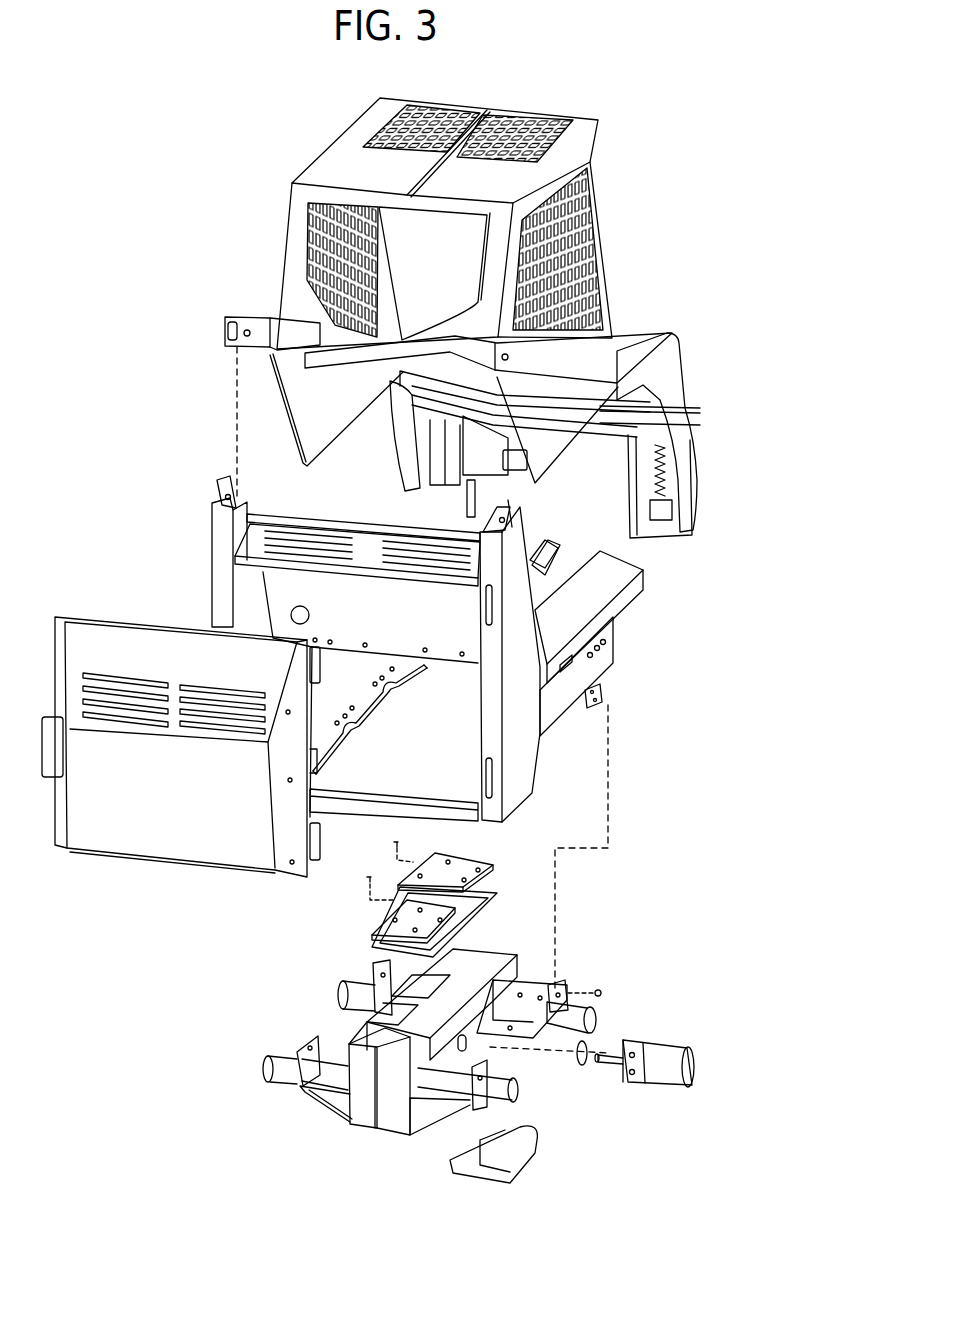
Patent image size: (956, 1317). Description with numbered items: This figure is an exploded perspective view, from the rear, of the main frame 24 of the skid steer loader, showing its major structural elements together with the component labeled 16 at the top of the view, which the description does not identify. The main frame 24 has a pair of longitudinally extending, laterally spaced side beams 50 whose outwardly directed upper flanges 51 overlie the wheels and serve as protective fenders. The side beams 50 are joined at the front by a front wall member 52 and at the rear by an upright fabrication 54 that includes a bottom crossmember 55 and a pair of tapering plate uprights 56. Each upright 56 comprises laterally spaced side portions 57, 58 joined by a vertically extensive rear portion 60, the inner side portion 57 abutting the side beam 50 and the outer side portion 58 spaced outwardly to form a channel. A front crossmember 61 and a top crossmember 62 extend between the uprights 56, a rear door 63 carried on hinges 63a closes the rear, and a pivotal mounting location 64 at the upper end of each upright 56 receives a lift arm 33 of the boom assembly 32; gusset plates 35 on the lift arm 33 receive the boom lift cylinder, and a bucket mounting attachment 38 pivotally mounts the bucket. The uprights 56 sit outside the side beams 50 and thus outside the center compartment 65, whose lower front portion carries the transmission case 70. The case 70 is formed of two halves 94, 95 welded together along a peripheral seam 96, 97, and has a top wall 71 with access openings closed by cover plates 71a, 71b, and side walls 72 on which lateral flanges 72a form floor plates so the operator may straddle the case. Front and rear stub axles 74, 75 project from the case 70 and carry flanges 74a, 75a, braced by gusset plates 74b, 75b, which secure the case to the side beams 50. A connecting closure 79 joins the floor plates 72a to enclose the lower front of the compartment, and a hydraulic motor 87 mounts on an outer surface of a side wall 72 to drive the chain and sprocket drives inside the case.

The cab 16 is at (582, 150).
The main frame 24 is at (626, 665).
The boom assembly 32 is at (496, 408).
The lift arms 33 is at (600, 355).
The gusset plates 35 is at (667, 368).
The bucket mounting attachment 38 is at (711, 416).
The side beams 50 is at (603, 635).
The upper flanges 51 is at (630, 570).
The front wall member 52 is at (565, 575).
The upright fabrication 54 is at (425, 722).
The bottom crossmember 55 is at (366, 790).
The uprights 56 is at (213, 538).
The inner side portion 57 is at (493, 520).
The outer side portion 58 is at (522, 555).
The rear portion 60 is at (482, 712).
The front crossmember 61 is at (372, 608).
The top crossmember 62 is at (372, 540).
The rear door 63 is at (211, 747).
The hinges 63a is at (308, 670).
The pivotal mounting location 64 is at (228, 490).
The center compartment 65 is at (455, 700).
The transmission case 70 is at (451, 1018).
The top wall 71 is at (490, 962).
The cover plate 71a is at (378, 925).
The cover plate 71b is at (462, 858).
The side walls 72 is at (510, 967).
The lateral flanges 72a is at (530, 1048).
The front stub axle 74 is at (330, 998).
The flange 74a is at (378, 975).
The gusset plate 74b is at (528, 1078).
The rear stub axle 75 is at (384, 1105).
The flange 75a is at (296, 1068).
The gusset plate 75b is at (322, 1107).
The connecting closure 79 is at (535, 1160).
The second hydraulic motor 87 is at (660, 1050).
The transmission case half 94 is at (350, 1124).
The transmission case half 95 is at (398, 1128).
The peripheral seam 96 is at (480, 957).
The peripheral seam 97 is at (372, 1132).